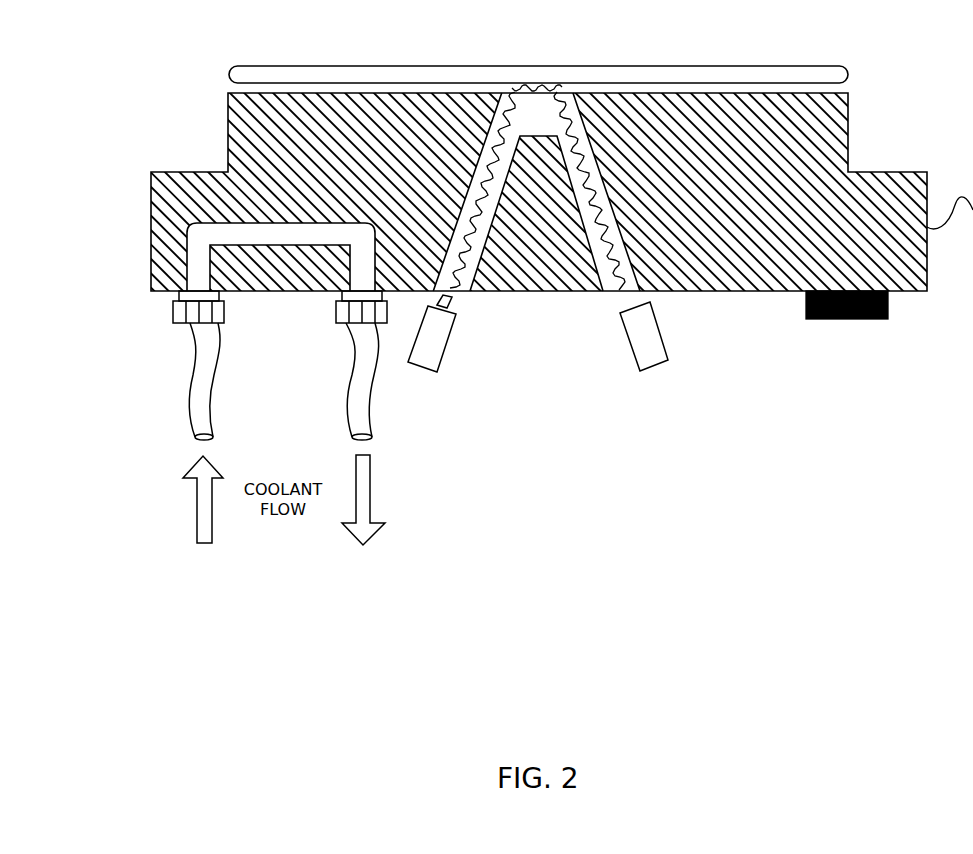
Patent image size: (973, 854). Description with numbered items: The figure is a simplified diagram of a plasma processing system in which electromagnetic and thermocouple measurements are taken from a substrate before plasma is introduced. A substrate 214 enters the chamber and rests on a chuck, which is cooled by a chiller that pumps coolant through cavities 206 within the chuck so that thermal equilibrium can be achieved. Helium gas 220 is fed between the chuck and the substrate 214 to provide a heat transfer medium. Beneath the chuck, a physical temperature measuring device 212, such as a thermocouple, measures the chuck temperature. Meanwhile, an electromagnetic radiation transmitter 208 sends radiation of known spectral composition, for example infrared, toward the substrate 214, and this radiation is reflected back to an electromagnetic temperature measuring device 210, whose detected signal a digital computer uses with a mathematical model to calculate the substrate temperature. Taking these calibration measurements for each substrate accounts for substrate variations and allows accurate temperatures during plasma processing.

The cavities 206 is at (197, 250).
The electromagnetic radiation transmitter 208 is at (432, 352).
The electromagnetic temperature measuring device 210 is at (653, 353).
The physical temperature measuring device 212 is at (862, 320).
The substrate 214 is at (232, 75).
The helium gas 220 is at (850, 92).